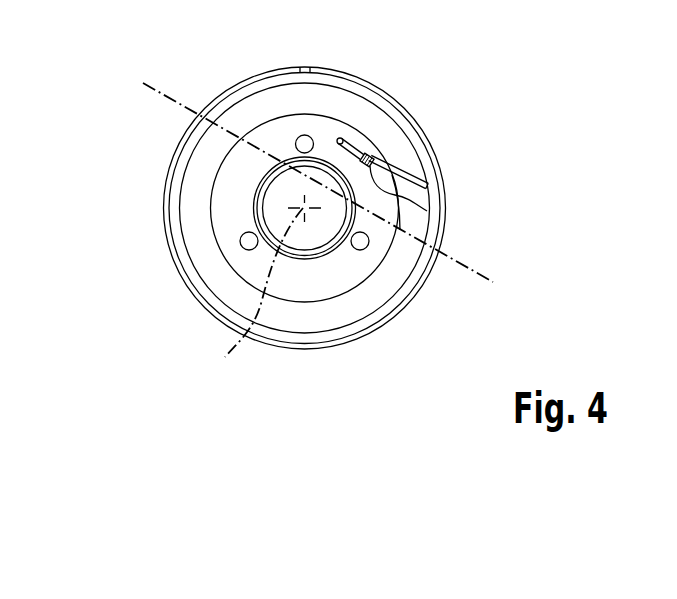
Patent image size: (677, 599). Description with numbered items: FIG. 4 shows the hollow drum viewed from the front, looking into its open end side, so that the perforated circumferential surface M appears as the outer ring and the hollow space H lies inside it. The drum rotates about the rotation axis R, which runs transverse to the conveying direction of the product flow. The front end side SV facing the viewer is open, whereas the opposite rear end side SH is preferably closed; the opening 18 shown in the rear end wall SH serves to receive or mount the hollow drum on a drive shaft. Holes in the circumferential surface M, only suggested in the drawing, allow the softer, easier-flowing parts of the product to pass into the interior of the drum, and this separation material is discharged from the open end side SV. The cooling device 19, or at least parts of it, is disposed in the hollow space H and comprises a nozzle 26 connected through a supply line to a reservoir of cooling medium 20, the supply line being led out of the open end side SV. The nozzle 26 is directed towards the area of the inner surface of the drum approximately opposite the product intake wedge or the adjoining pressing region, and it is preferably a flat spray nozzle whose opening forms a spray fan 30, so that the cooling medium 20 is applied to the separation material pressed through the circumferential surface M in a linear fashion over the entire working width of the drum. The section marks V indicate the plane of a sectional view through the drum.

The perforated circumferential surface M is at (356, 77).
The hollow space H is at (213, 250).
The opening 18 is at (317, 233).
The cooling device 19 is at (398, 143).
The cooling medium 20 is at (428, 180).
The nozzle 26 is at (370, 167).
The spray fan 30 is at (421, 163).
The rotation axis R is at (254, 297).
The rear end side SH is at (248, 216).
The front end side SV is at (270, 347).
The section line V- V is at (141, 95).